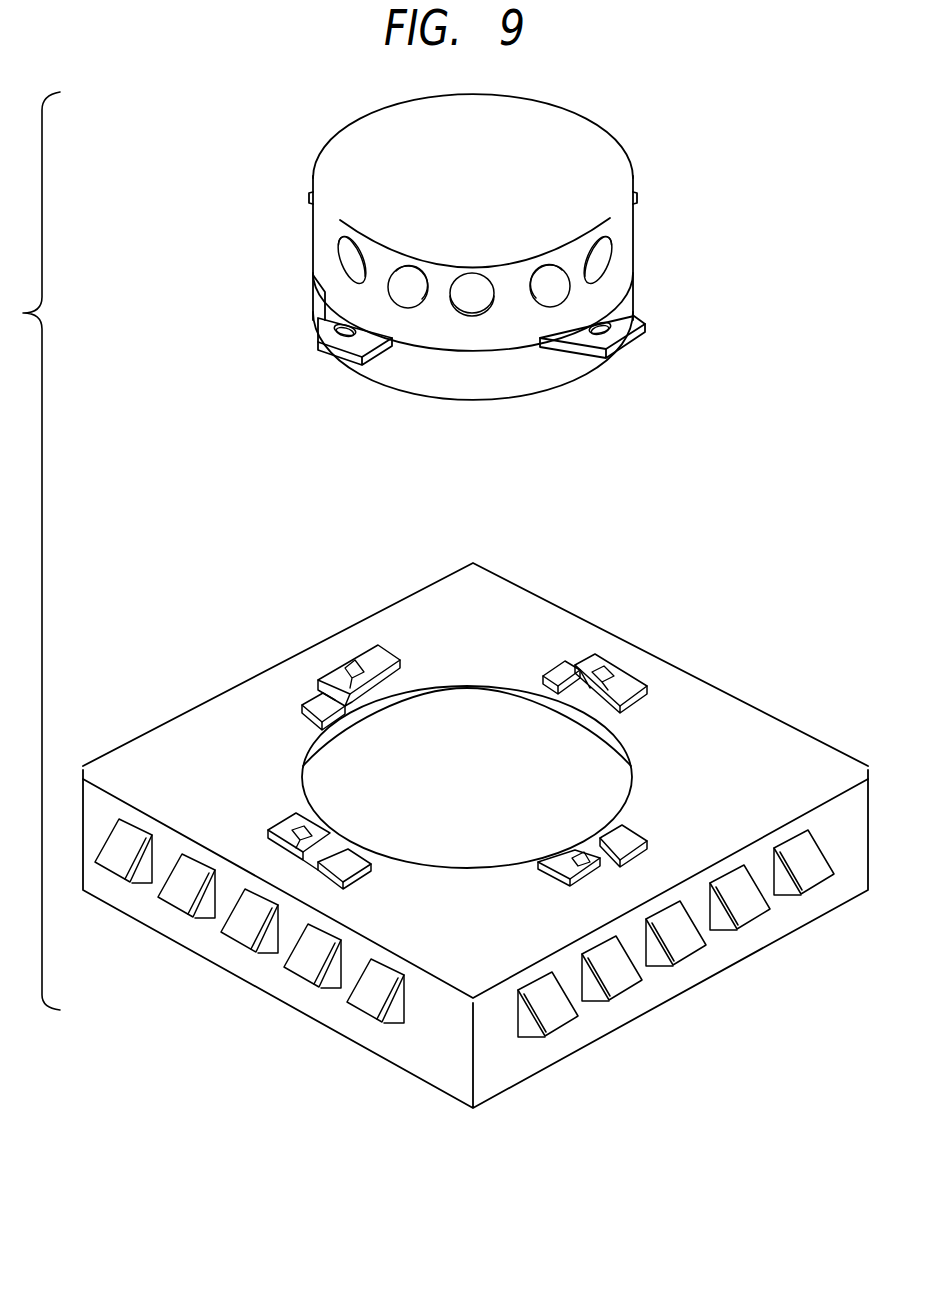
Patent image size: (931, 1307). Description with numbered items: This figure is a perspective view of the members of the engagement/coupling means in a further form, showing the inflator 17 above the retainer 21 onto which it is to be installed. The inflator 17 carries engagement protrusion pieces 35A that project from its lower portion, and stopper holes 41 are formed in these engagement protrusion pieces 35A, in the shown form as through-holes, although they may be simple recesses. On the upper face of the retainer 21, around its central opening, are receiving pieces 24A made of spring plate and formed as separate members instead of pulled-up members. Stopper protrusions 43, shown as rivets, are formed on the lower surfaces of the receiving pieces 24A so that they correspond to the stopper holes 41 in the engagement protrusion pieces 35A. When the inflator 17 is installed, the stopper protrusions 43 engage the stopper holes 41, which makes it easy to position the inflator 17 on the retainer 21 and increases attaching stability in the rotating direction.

The inflator 17 is at (617, 140).
The stopper holes 41 is at (606, 326).
The engagement protrusion pieces 35A is at (634, 340).
The retainer 21 is at (742, 703).
The receiving pieces 24A is at (603, 664).
The stopper protrusions 43 is at (613, 676).